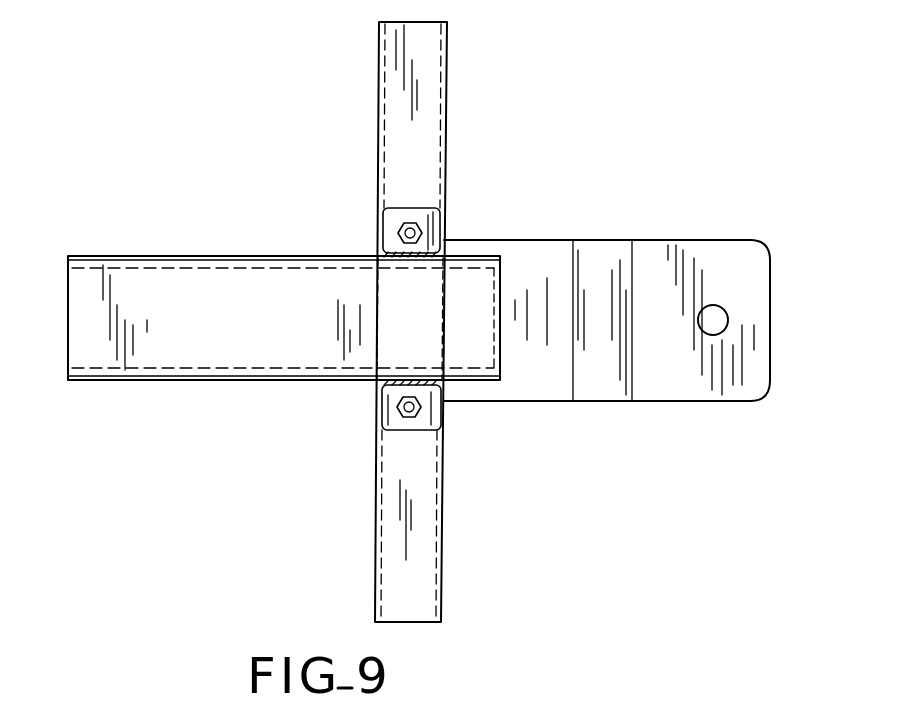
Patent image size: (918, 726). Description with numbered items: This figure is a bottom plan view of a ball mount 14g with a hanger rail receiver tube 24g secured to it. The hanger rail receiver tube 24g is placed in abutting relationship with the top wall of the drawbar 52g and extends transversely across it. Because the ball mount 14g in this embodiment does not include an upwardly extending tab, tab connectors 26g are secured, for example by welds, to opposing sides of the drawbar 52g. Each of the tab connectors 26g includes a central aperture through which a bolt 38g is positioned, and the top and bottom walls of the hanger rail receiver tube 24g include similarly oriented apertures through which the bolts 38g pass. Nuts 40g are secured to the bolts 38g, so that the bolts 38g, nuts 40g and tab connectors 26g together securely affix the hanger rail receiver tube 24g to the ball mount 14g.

The ball mount 14g is at (547, 178).
The hanger rail receiver tube 24g is at (437, 58).
The tab connectors 26g is at (392, 213).
The bolts 38g is at (414, 233).
The nuts 40g is at (408, 227).
The drawbar 52g is at (118, 277).